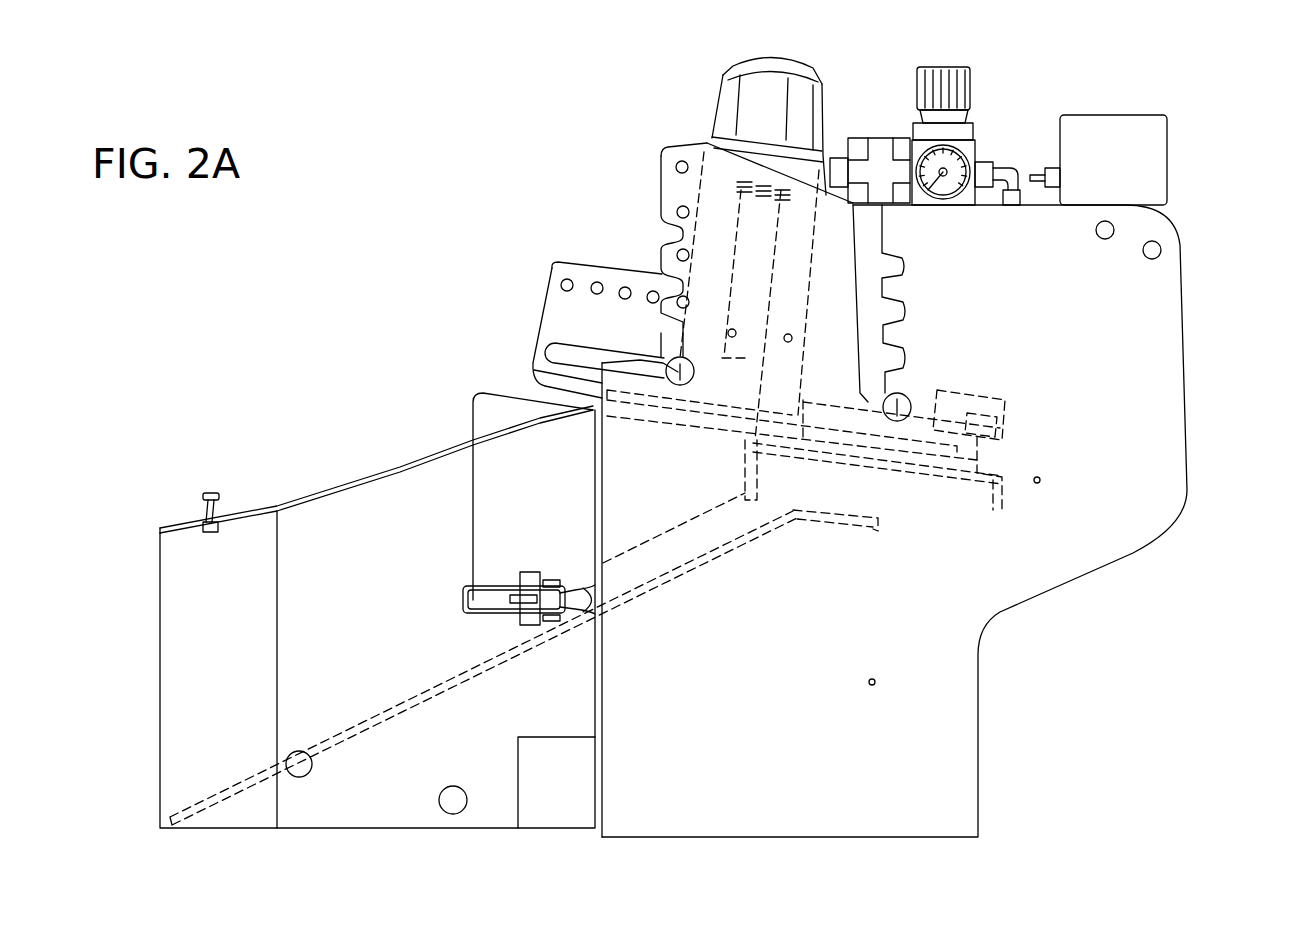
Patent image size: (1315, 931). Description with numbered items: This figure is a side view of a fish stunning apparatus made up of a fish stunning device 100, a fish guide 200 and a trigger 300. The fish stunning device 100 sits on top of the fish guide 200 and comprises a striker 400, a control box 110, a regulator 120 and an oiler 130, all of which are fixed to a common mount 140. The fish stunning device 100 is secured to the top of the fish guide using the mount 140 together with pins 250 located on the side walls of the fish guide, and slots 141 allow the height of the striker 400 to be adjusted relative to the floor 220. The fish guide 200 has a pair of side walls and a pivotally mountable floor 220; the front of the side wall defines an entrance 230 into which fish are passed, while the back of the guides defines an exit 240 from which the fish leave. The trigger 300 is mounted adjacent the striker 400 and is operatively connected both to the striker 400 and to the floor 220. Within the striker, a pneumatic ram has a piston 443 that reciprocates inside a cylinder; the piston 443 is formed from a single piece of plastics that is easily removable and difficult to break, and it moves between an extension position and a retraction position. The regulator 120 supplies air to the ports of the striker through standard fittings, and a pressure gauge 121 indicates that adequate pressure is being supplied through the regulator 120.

The fish stunning device 100 is at (1232, 164).
The control box 110 is at (1107, 128).
The regulator 120 is at (947, 92).
The pressure gauge 121 is at (912, 168).
The oiler 130 is at (1080, 433).
The mount 140 is at (676, 182).
The slots 141 is at (667, 268).
The fish guide 200 is at (421, 451).
The floor 220 is at (393, 693).
The entrance 230 is at (212, 707).
The exit 240 is at (1021, 692).
The pins 250 is at (898, 407).
The trigger 300 is at (920, 473).
The striker 400 is at (765, 103).
The piston 443 is at (752, 335).